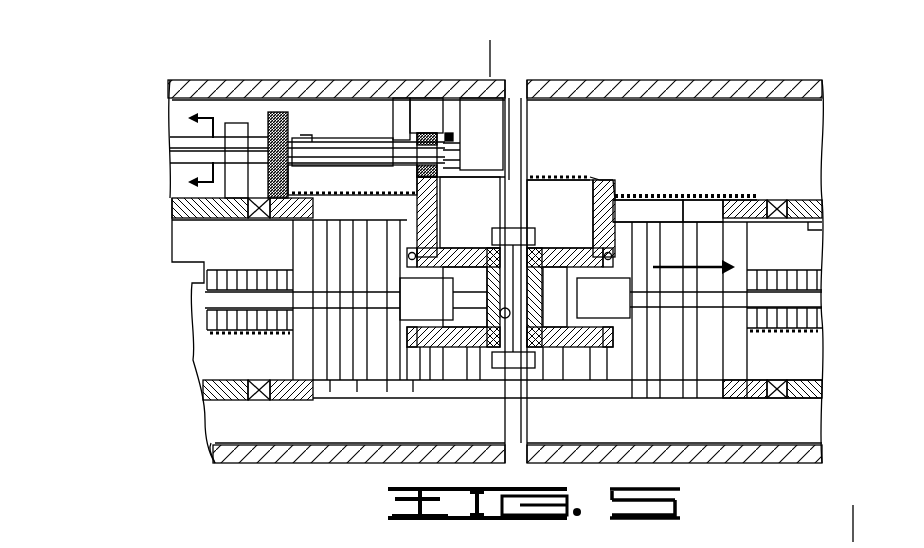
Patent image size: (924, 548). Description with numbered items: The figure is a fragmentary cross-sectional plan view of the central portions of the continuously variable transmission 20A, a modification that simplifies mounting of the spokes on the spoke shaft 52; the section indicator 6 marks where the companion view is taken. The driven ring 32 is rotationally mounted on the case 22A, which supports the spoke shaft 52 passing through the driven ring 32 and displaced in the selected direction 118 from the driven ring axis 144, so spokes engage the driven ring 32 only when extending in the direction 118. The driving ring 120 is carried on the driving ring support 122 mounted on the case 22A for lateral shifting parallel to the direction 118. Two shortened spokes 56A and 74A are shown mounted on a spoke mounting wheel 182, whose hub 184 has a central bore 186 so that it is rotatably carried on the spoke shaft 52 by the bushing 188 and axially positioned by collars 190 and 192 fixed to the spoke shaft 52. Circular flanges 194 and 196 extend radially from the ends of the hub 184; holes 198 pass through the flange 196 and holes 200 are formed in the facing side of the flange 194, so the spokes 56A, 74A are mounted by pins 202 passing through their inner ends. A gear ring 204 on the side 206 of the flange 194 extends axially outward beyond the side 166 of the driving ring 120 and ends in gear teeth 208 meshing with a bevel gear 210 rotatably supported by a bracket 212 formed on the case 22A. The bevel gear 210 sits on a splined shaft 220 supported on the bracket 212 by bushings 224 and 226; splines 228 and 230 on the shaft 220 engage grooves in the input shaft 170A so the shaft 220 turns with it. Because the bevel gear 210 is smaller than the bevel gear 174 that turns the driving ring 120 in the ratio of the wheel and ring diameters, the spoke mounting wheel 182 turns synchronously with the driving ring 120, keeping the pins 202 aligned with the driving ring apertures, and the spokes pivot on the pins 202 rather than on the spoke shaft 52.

The case 22A is at (789, 78).
The continuously variable transmission 20A is at (834, 136).
The driven ring axis 144 is at (497, 55).
The spoke shaft 52 is at (513, 110).
The splined shaft 220 is at (305, 138).
The spline 230 is at (297, 113).
The spline 228 is at (310, 150).
The bracket 212 is at (400, 140).
The bushing 224 is at (397, 143).
The bevel gear 210 is at (428, 133).
The bushing 226 is at (450, 137).
The gear teeth 208 is at (560, 172).
The spoke mounting wheel 182 is at (618, 174).
The gear ring 204 is at (628, 181).
The holes 200 is at (447, 240).
The selected direction 118 is at (678, 262).
The driving ring 120 is at (772, 188).
The driving ring support 122 is at (812, 229).
The driven ring 32 is at (792, 268).
The input shaft 170A is at (187, 150).
The bevel gear 174 is at (272, 172).
The side of driving ring 166 is at (353, 189).
The collar 190 is at (525, 225).
The circular flange 194 is at (578, 257).
The side of flange 206 is at (455, 237).
The bushing 188 is at (500, 287).
The spoke 74A is at (299, 316).
The spoke 56A is at (735, 316).
The holes 198 is at (412, 378).
The pins 202 is at (425, 352).
The central bore 186 is at (455, 335).
The collar 192 is at (500, 370).
The circular flange 196 is at (531, 368).
The hub 184 is at (501, 316).
The section view indicator 6 is at (194, 153).